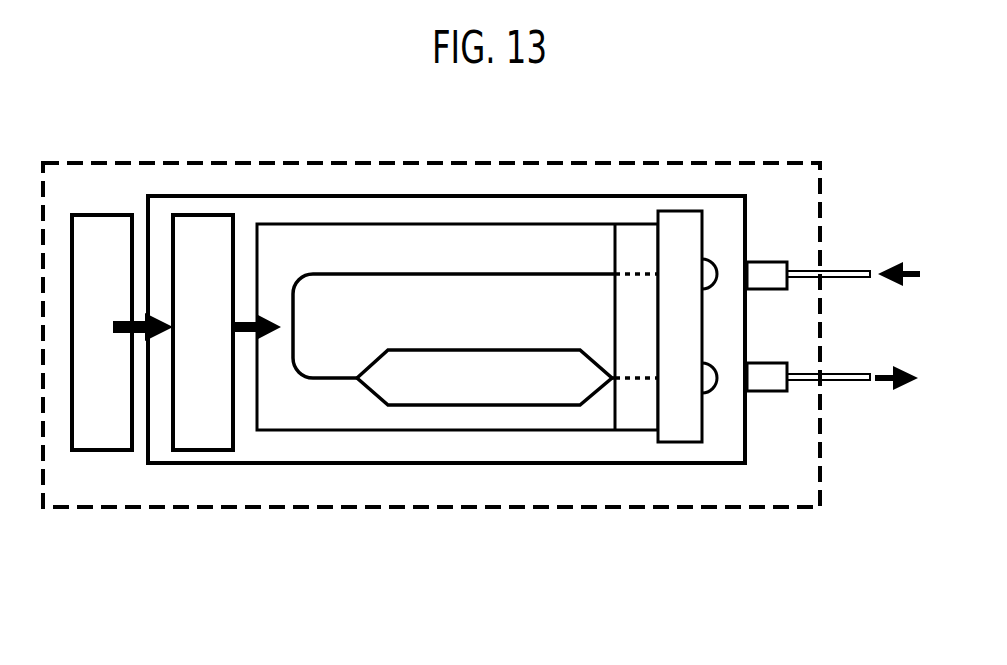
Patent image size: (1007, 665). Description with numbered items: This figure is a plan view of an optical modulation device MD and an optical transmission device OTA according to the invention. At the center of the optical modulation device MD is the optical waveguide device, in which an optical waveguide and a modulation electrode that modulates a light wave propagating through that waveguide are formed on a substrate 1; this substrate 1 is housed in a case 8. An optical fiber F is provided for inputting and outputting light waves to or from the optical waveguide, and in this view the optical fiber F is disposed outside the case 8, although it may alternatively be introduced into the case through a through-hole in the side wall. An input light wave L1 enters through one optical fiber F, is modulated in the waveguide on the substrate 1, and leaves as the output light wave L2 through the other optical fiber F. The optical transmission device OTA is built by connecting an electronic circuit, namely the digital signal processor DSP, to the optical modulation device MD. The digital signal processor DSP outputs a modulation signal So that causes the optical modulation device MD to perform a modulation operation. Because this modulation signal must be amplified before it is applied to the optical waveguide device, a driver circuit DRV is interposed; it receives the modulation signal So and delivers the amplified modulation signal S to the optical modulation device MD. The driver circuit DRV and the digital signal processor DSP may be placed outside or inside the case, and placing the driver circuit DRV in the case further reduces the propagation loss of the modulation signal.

The substrate 1 is at (408, 227).
The case 8 is at (505, 195).
The optical fiber F is at (797, 263).
The input light wave L1 is at (901, 256).
The output light wave L2 is at (900, 393).
The digital signal processor DSP is at (98, 220).
The driver circuit DRV is at (202, 218).
The optical modulation device MD is at (446, 401).
The optical transmission device OTA is at (431, 405).
The modulation signal So is at (134, 316).
The amplified modulation signal S is at (259, 315).